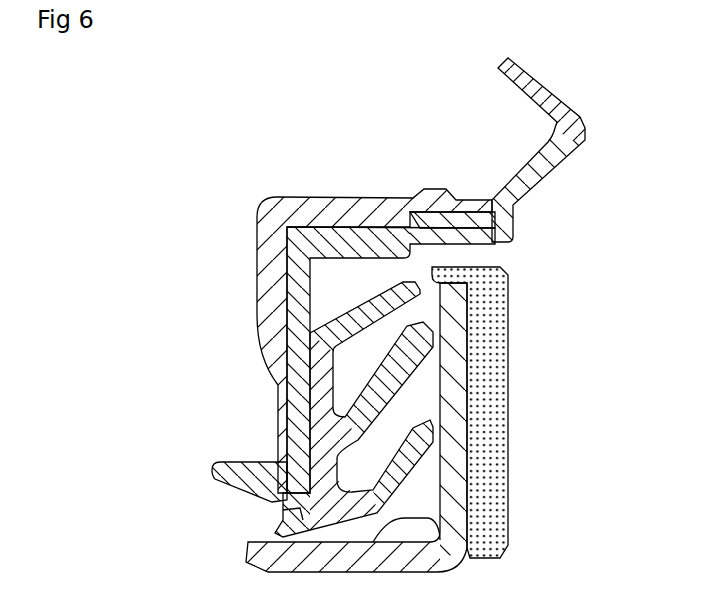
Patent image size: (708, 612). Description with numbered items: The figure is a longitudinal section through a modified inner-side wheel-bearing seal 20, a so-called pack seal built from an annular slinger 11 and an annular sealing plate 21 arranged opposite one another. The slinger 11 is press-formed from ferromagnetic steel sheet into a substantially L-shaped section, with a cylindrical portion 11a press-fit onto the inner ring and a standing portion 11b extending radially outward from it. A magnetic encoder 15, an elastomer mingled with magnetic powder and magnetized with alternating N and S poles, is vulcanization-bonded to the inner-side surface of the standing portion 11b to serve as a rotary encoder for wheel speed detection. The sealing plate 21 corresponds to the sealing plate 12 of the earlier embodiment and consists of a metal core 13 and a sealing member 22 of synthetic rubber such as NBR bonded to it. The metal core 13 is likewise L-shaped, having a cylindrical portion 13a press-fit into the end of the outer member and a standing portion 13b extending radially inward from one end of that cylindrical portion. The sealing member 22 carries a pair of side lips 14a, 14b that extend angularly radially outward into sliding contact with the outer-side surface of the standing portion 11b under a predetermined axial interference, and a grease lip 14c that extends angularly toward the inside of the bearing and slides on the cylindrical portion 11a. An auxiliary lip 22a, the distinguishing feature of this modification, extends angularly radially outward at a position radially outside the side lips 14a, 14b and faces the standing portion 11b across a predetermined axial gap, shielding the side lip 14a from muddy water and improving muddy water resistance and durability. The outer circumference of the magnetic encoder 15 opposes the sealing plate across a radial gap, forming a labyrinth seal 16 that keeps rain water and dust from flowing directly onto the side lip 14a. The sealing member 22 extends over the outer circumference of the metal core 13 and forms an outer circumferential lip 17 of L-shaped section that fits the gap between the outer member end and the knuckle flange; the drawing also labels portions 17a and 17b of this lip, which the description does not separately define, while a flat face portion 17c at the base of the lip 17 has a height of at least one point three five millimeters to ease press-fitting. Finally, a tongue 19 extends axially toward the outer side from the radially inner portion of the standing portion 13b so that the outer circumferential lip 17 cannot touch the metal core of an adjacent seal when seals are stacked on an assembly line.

The slinger 11 is at (580, 455).
The cylindrical portion 11a is at (372, 550).
The standing portion 11b is at (453, 453).
The sealing plate 12 is at (220, 4).
The metal core 13 is at (138, 253).
The cylindrical portion 13a is at (288, 217).
The standing portion 13b is at (270, 288).
The side lip 14a is at (312, 365).
The side lip 14b is at (375, 428).
The grease lip 14c is at (425, 424).
The magnetic encoder 15 is at (483, 357).
The labyrinth seal 16 is at (465, 260).
The outer circumferential lip 17 is at (584, 103).
The inclined portion of slinger 17a is at (573, 128).
The end portion of slinger 17b is at (497, 67).
The flat face portion 17c is at (515, 222).
The tongue 19 is at (233, 477).
The seal 20 is at (208, 201).
The sealing plate 21 is at (82, 278).
The sealing member 22 is at (137, 343).
The auxiliary lip 22a is at (400, 293).